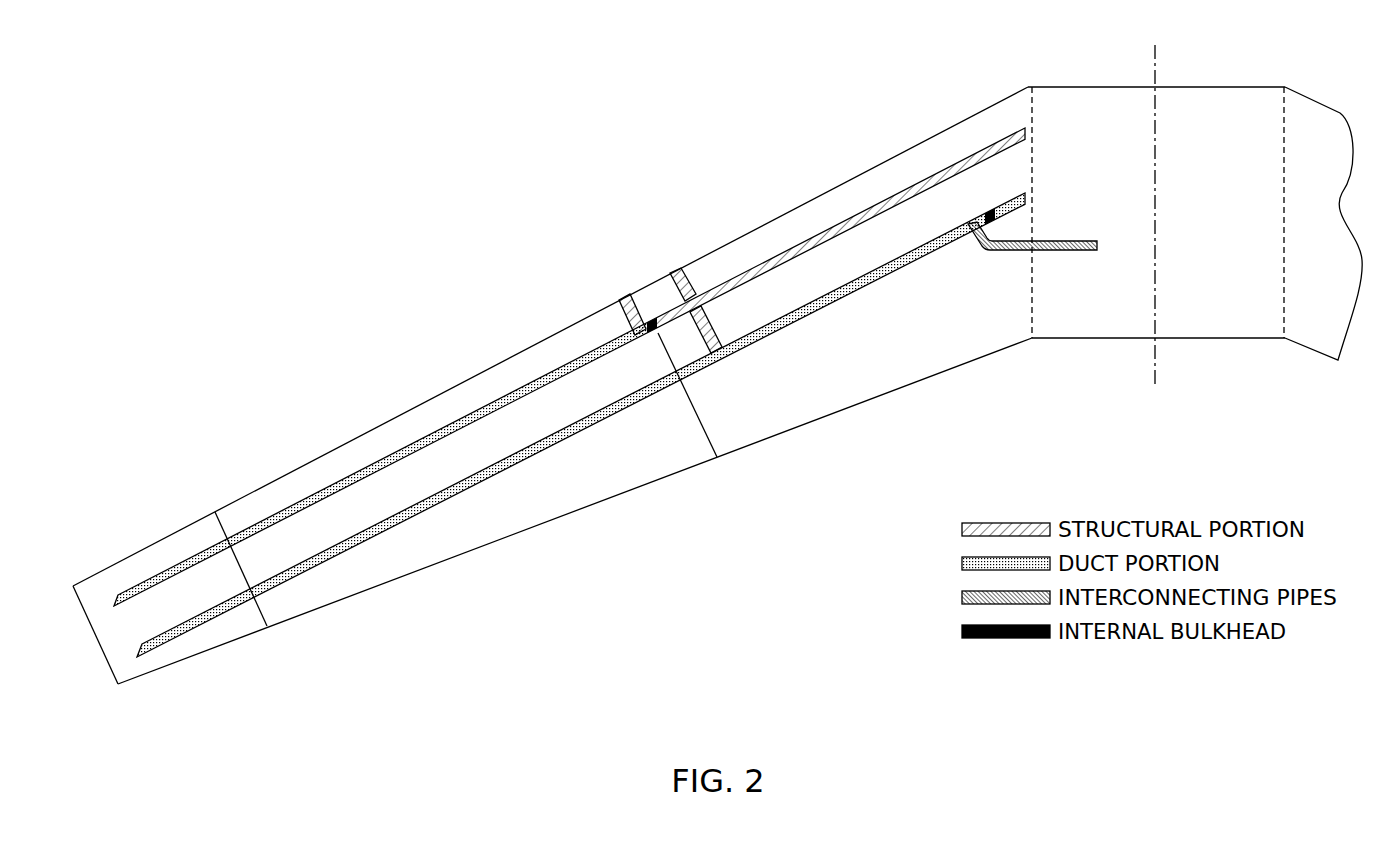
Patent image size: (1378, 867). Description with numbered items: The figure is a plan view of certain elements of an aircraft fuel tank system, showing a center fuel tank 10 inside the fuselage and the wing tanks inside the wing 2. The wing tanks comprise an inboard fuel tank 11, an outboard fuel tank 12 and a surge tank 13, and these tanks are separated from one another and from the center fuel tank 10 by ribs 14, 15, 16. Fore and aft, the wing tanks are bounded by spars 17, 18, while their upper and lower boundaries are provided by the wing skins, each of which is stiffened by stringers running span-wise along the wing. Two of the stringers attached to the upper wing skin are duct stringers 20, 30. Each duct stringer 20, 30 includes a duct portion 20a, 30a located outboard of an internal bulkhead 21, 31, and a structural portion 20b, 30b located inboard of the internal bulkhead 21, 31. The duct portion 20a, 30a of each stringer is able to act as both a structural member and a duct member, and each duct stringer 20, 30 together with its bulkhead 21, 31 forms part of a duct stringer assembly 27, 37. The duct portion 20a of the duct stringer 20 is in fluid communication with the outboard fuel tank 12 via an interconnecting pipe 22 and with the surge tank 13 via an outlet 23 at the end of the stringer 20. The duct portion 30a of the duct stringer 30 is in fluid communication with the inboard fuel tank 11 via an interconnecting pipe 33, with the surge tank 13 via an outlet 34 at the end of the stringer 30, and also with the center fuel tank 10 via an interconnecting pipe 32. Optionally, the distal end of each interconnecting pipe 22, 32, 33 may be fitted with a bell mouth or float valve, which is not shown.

The wing 2 is at (856, 193).
The center fuel tank 10 is at (1081, 187).
The inboard fuel tank 11 is at (842, 360).
The outboard fuel tank 12 is at (588, 473).
The surge tank 13 is at (150, 622).
The rib 14 is at (1031, 293).
The rib 15 is at (705, 415).
The rib 16 is at (225, 532).
The spar 17 is at (487, 372).
The spar 18 is at (465, 556).
The duct stringer 20 is at (566, 360).
The duct portion 20a is at (438, 430).
The structural portion 20b is at (793, 247).
The internal bulkhead 21 is at (650, 288).
The interconnecting pipe 22 is at (623, 300).
The outlet 23 is at (116, 596).
The duct stringer assembly 27 is at (356, 448).
The duct stringer 30 is at (577, 383).
The duct portion 30a is at (297, 578).
The structural portion 30b is at (1010, 190).
The internal bulkhead 31 is at (987, 207).
The interconnecting pipe 32 is at (1060, 252).
The interconnecting pipe 33 is at (672, 290).
The outlet 34 is at (140, 658).
The duct stringer assembly 37 is at (390, 566).